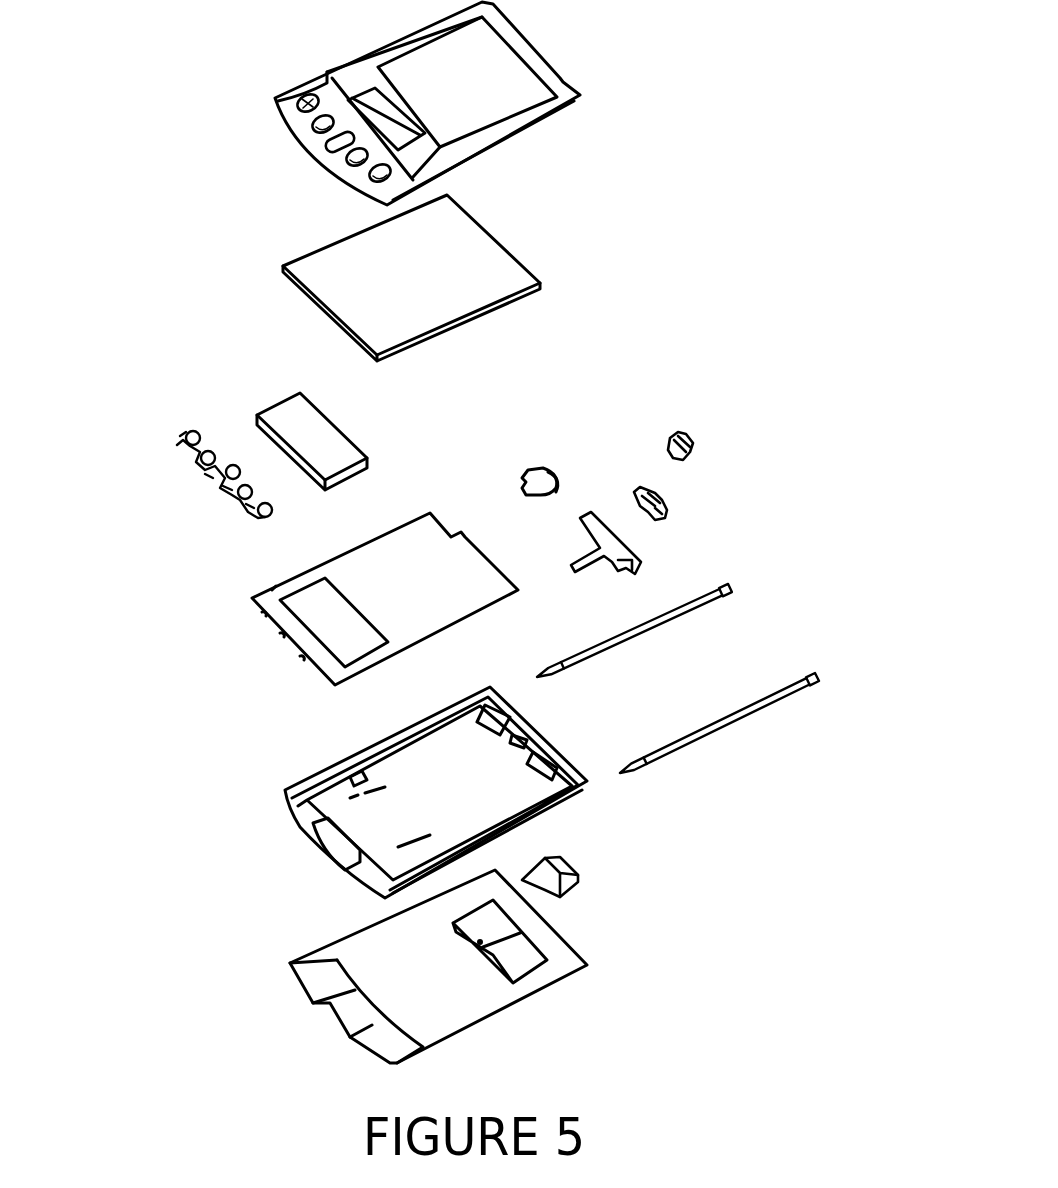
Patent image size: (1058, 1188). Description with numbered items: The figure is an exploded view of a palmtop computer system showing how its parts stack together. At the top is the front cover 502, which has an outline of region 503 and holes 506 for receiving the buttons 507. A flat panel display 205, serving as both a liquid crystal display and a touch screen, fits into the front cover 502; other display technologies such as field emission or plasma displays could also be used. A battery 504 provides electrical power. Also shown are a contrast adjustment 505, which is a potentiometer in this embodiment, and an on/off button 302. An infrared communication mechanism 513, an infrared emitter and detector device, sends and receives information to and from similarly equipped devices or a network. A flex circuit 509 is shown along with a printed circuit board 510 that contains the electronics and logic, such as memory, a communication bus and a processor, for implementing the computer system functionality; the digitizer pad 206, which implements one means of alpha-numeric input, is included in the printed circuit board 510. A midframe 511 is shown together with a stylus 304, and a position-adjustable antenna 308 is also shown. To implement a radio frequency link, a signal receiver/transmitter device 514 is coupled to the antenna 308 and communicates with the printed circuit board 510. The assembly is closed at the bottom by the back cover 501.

The front cover 502 is at (448, 103).
The region 503 is at (385, 108).
The holes 506 is at (313, 123).
The flat panel display 205 is at (506, 263).
The battery 504 is at (288, 418).
The buttons 507 is at (218, 502).
The contrast adjustment 505 is at (560, 473).
The on/off button 302 is at (692, 447).
The infrared communication mechanism 513 is at (667, 502).
The flex circuit 509 is at (643, 567).
The digitizer pad 206 is at (269, 633).
The printed circuit board 510 is at (300, 628).
The position-adjustable antenna 308 is at (717, 605).
The stylus 304 is at (790, 703).
The midframe 511 is at (325, 840).
The receiver/transmitter device 514 is at (570, 872).
The back cover 501 is at (528, 988).